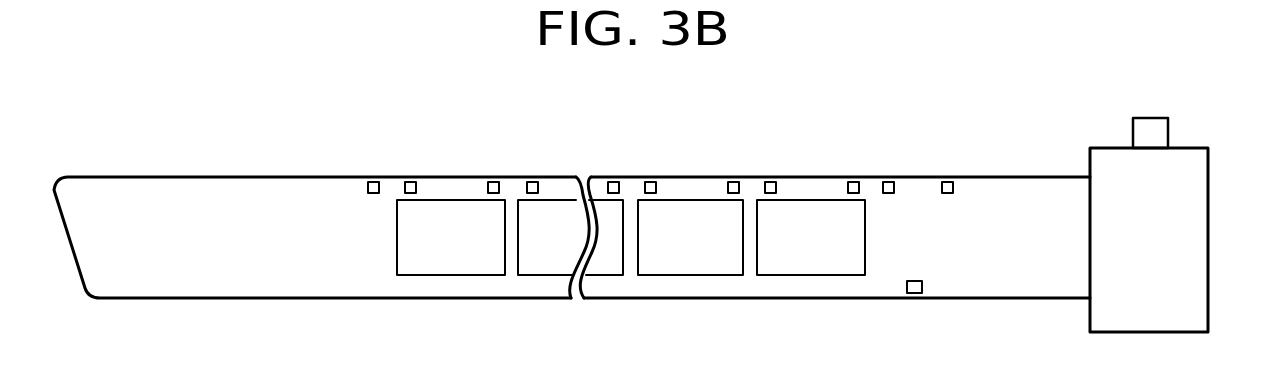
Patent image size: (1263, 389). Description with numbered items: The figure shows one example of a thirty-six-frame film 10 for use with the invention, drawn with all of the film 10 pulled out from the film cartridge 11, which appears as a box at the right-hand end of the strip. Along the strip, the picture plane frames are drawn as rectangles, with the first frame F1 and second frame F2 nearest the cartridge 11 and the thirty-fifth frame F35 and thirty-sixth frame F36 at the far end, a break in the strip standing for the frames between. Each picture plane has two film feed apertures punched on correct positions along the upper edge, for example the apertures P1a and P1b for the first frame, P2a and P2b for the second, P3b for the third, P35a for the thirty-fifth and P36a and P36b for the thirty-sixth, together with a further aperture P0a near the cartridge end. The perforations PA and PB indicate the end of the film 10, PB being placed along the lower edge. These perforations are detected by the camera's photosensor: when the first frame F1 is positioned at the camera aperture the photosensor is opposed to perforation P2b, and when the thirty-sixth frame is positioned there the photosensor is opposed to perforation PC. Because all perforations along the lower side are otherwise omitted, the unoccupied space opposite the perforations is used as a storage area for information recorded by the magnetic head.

The film 10 is at (90, 175).
The film cartridge 11 is at (1208, 155).
The perforation PC is at (372, 182).
The film feed aperture P36a is at (412, 182).
The film feed aperture P36b is at (494, 182).
The film feed aperture P35a is at (534, 182).
The film feed aperture P3b is at (614, 182).
The film feed aperture P2a is at (652, 182).
The film feed aperture P2b is at (734, 182).
The film feed aperture P1a is at (771, 182).
The film feed aperture P1b is at (853, 182).
The perforation P0a is at (889, 182).
The perforation PA is at (948, 182).
The perforation PB is at (913, 295).
The picture plane frame F36 is at (451, 237).
The picture plane frame F35 is at (547, 237).
The picture plane frame F2 is at (690, 237).
The picture plane frame F1 is at (811, 237).